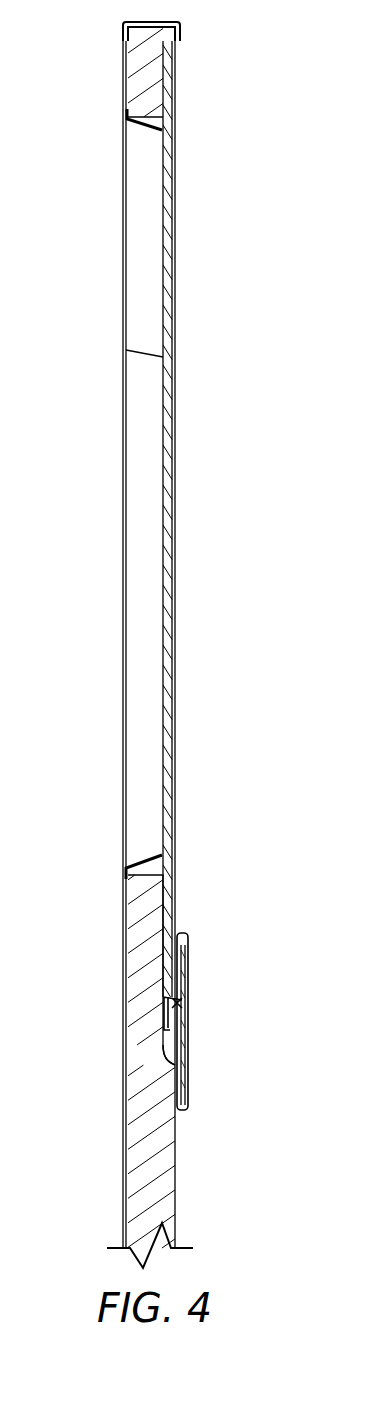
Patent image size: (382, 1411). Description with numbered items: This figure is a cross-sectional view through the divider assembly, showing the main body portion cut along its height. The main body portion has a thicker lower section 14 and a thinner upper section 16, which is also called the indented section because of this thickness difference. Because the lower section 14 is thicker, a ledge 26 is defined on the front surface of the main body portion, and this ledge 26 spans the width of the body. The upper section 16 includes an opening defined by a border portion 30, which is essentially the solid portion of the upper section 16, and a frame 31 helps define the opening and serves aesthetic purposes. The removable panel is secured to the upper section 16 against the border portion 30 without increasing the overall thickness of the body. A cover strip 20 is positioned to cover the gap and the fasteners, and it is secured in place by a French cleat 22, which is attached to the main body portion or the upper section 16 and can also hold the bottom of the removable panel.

The lower section 14 is at (163, 1167).
The upper section 16 is at (132, 962).
The cover strip 20 is at (185, 963).
The French cleat 22 is at (183, 1008).
The ledge 26 is at (177, 1062).
The border portion 30 is at (147, 70).
The frame 31 is at (147, 132).